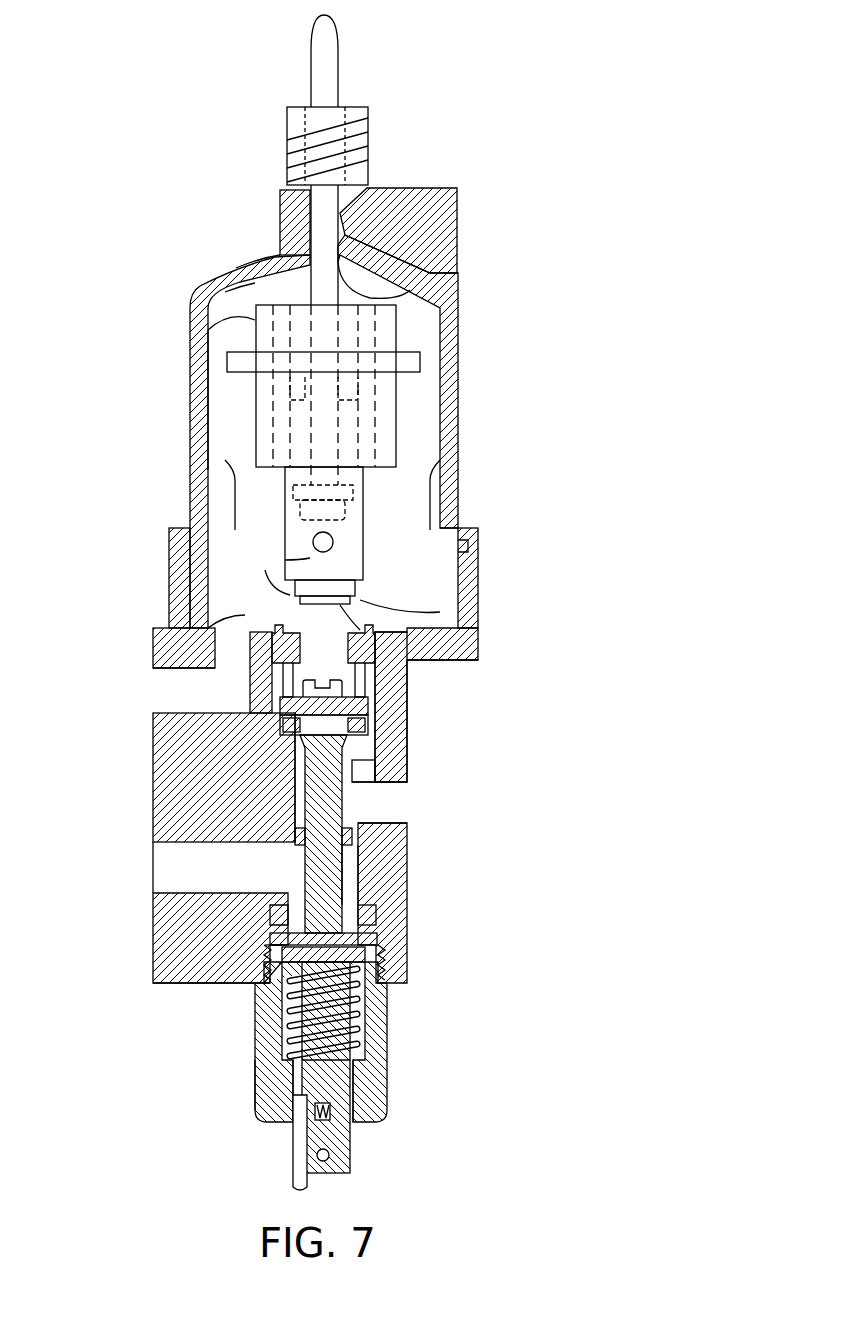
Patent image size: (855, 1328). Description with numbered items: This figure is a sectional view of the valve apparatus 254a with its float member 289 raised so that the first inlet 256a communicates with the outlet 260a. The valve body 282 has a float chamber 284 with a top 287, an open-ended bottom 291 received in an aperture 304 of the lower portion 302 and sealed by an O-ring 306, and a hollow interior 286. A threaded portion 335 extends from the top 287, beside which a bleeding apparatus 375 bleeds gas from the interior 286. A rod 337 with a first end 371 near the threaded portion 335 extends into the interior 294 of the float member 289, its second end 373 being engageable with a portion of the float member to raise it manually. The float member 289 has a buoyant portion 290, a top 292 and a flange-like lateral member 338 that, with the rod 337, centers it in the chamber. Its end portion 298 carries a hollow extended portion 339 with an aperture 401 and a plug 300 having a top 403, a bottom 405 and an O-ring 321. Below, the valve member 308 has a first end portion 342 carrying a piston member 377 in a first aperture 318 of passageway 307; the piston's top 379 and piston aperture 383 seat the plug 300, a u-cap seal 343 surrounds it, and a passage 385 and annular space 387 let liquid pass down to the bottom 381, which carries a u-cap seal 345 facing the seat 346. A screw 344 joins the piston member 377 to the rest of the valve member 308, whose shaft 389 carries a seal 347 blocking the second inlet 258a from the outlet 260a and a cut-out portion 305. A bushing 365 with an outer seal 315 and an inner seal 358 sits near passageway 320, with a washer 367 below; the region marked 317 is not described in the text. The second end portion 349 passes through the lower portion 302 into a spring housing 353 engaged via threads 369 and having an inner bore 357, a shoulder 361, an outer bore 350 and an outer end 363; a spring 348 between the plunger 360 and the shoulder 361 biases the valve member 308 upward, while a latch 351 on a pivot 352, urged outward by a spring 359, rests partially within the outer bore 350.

The valve apparatus 254a is at (232, 77).
The first end of rod 371 is at (338, 37).
The threaded portion 335 is at (286, 133).
The bleeding apparatus 375 is at (413, 184).
The rod 337 is at (282, 250).
The top 287 is at (238, 266).
The interior of float member 294 is at (243, 288).
The buoyant portion 290 is at (253, 318).
The float chamber 284 is at (207, 338).
The float member 289 is at (253, 400).
The valve body 282 is at (189, 434).
The interior of float chamber 286 is at (224, 465).
The end portion of float member 298 is at (174, 528).
The piston aperture 383 is at (274, 634).
The top of piston member 379 is at (282, 655).
The open-ended bottom 291 is at (240, 630).
The screw 344 is at (170, 646).
The first inlet 256a is at (158, 681).
The upper body block 317 is at (223, 702).
The bottom of piston member 381 is at (254, 738).
The cut-out portion 305 is at (308, 798).
The valve member 308 is at (298, 758).
The second inlet 258a is at (158, 858).
The passageway 320 is at (248, 879).
The outer seal 315 is at (213, 938).
The inner seal 358 is at (268, 944).
The lower portion of valve body 302 is at (164, 993).
The plunger 360 is at (258, 968).
The threads 369 is at (270, 990).
The spring housing 353 is at (255, 1098).
The outer end of spring housing 363 is at (293, 1118).
The latch 351 is at (294, 1128).
The O-ring 321 is at (298, 605).
The top of plug 403 is at (362, 574).
The top of float member 292 is at (398, 318).
The flange-like lateral member 338 is at (413, 360).
The second end of rod 373 is at (348, 488).
The extended portion 339 is at (334, 539).
The aperture 401 is at (353, 545).
The aperture of lower portion 304 is at (459, 523).
The O-ring 306 is at (469, 533).
The plug 300 is at (462, 553).
The bottom of plug 405 is at (398, 624).
The first aperture 318 is at (440, 608).
The first end portion of valve member 342 is at (445, 632).
The u-cap seal 343 is at (420, 651).
The piston member 377 is at (384, 685).
The passage 385 is at (368, 704).
The annular space 387 is at (366, 717).
The u-cap seal 345 is at (358, 734).
The seat 346 is at (364, 766).
The outlet 260a is at (368, 801).
The shaft 389 is at (352, 835).
The seal 347 is at (350, 846).
The passageway 307 is at (374, 870).
The bushing 365 is at (364, 914).
The washer 367 is at (365, 941).
The spring 348 is at (363, 1004).
The inner bore 357 is at (373, 1030).
The shoulder 361 is at (345, 1040).
The second end portion of valve member 349 is at (352, 1108).
The outer bore 350 is at (362, 1128).
The spring 359 is at (337, 1148).
The pivot 352 is at (326, 1162).